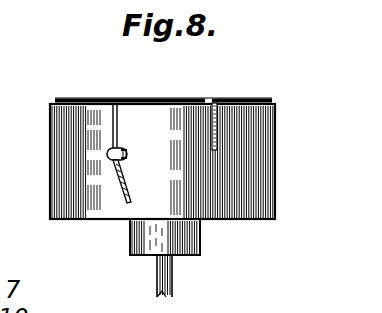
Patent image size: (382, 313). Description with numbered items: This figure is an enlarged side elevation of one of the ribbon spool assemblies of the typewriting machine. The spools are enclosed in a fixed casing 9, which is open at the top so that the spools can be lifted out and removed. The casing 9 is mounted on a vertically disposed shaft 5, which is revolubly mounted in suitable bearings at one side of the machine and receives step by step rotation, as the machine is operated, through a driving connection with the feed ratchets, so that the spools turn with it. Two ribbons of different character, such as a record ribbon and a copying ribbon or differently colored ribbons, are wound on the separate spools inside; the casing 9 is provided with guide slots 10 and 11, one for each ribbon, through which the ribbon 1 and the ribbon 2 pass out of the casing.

The ribbon 1 is at (115, 172).
The ribbon 2 is at (217, 107).
The shaft 5 is at (172, 275).
The casing 9 is at (60, 146).
The guide slot 10 is at (213, 130).
The guide slot 11 is at (125, 203).